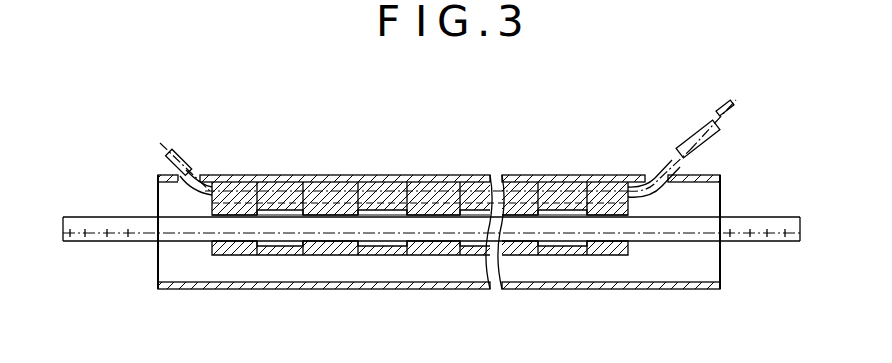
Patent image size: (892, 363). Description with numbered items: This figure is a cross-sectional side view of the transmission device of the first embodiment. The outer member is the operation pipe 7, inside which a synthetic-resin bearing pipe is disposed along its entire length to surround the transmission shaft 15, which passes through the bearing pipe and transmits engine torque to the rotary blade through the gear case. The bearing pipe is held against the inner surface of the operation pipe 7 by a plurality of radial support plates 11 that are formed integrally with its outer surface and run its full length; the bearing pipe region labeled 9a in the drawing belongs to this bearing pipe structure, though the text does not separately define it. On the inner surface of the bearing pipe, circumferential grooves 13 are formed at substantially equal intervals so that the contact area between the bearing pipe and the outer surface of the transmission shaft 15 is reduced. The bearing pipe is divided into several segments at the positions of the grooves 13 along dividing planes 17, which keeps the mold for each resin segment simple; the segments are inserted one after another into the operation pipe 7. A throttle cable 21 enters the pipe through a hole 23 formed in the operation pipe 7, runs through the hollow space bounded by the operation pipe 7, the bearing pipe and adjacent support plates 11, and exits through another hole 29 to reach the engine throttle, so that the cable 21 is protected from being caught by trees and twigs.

The operation pipe 7 is at (272, 176).
The lower winding block 9a is at (307, 255).
The radial support plates 11 is at (228, 185).
The grooves 13 is at (295, 210).
The transmission shaft 15 is at (693, 227).
The dividing planes 17 is at (358, 200).
The cable 21 is at (687, 153).
The hole 23 is at (195, 175).
The hole 29 is at (657, 178).